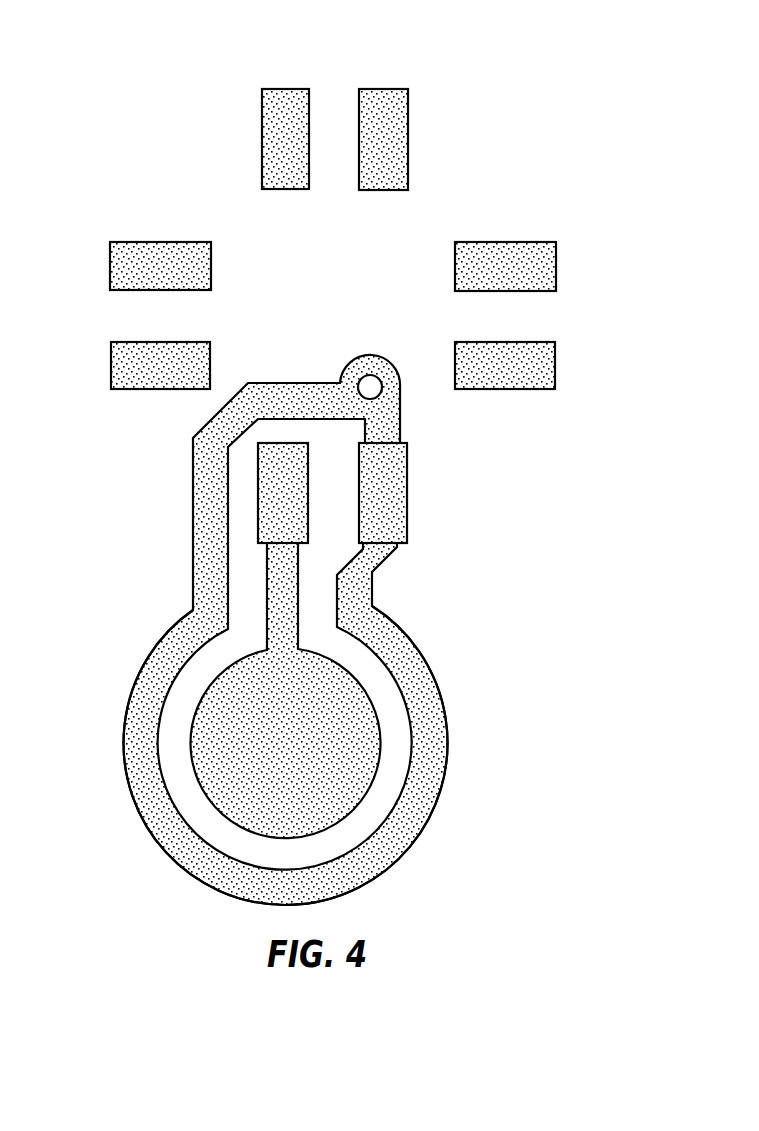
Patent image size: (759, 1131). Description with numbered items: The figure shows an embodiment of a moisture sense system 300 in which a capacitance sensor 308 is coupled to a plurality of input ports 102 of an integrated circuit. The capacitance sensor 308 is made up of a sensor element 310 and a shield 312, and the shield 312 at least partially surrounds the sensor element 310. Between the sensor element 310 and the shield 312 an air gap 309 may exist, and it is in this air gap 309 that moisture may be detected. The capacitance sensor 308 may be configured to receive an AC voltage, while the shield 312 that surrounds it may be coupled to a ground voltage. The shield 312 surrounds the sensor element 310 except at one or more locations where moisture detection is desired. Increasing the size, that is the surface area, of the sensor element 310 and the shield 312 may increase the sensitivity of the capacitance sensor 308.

The moisture sense system 300 is at (575, 80).
The input ports 102 is at (272, 135).
The capacitance sensor 308 is at (438, 641).
The air gap 309 is at (268, 630).
The sensor element 310 is at (358, 730).
The shield 312 is at (172, 833).